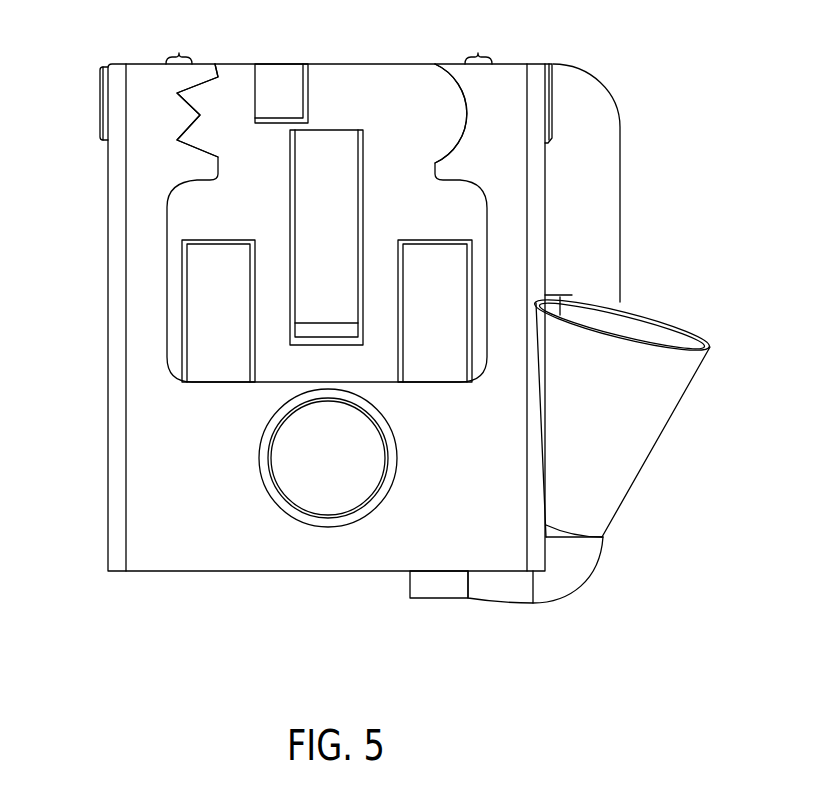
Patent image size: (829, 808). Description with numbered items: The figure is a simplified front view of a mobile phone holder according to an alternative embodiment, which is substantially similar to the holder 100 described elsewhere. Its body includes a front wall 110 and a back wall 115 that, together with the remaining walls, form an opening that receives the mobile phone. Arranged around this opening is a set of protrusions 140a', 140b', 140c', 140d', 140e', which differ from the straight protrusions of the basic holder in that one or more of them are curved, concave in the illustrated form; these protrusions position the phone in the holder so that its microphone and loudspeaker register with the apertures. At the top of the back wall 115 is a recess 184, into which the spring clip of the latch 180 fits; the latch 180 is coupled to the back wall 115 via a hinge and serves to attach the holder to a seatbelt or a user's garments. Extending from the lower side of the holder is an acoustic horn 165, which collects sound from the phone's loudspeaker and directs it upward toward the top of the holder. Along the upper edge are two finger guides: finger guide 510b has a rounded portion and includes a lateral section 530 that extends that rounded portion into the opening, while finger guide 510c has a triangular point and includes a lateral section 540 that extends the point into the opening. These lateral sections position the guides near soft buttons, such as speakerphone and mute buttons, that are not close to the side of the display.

The holder 100 is at (210, 623).
The front wall 110 is at (202, 433).
The back wall 115 is at (385, 88).
The protrusion 140a' is at (218, 311).
The protrusion 140b' is at (326, 237).
The protrusion 140c' is at (435, 311).
The protrusion 140d' is at (569, 85).
The protrusion 140e' is at (82, 88).
The acoustic horn 165 is at (667, 413).
The latch 180 is at (618, 145).
The recess 184 is at (277, 65).
The finger guide 510b is at (458, 132).
The finger guide 510c is at (198, 116).
The lateral section 530 is at (479, 47).
The lateral section 540 is at (177, 49).